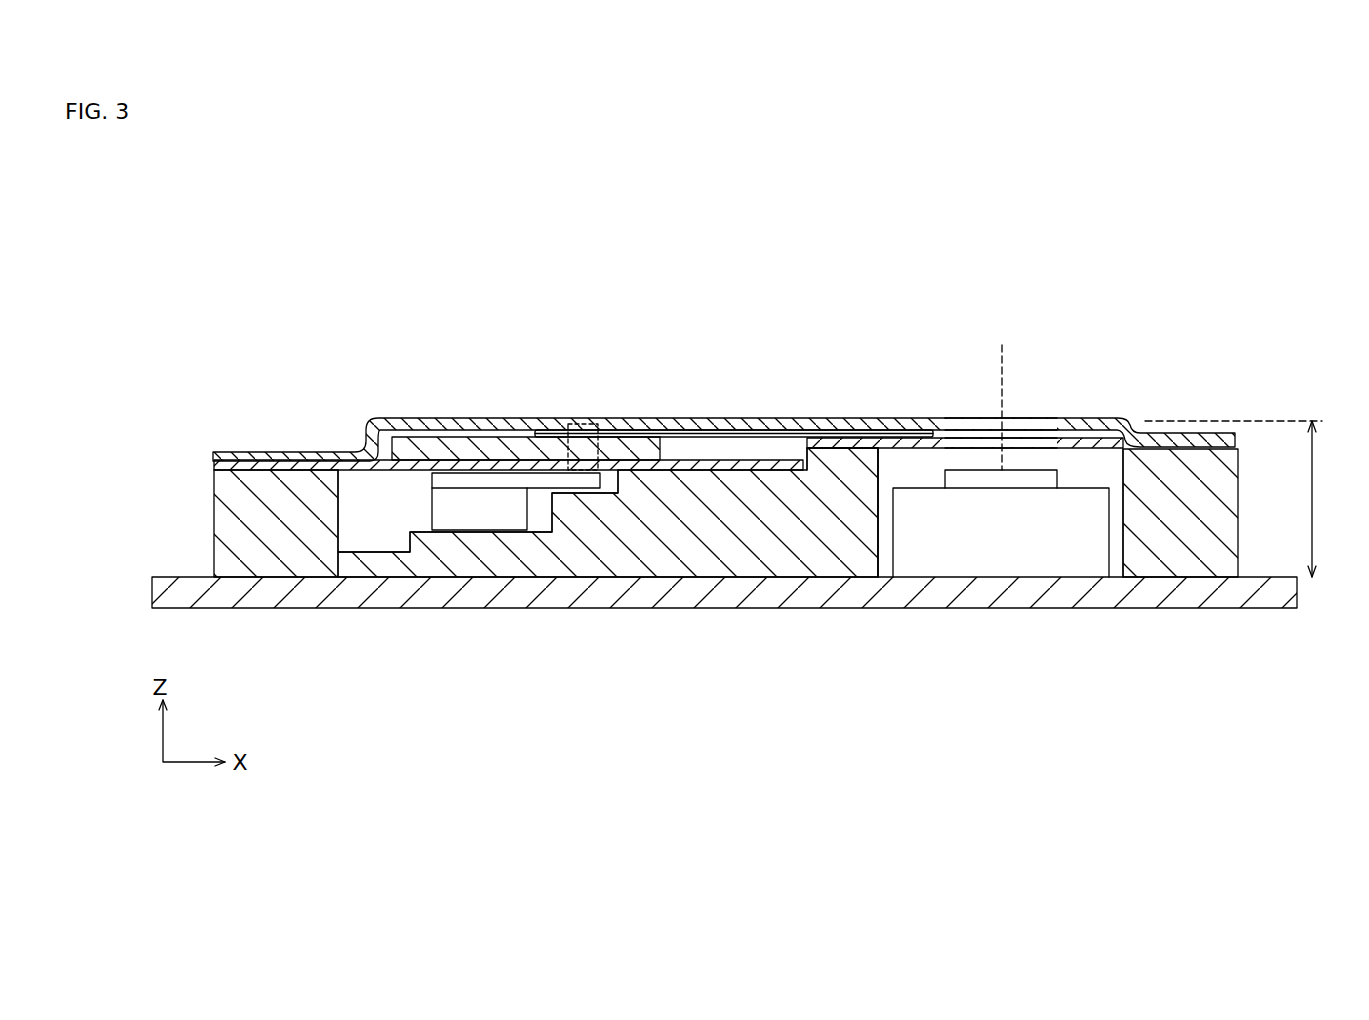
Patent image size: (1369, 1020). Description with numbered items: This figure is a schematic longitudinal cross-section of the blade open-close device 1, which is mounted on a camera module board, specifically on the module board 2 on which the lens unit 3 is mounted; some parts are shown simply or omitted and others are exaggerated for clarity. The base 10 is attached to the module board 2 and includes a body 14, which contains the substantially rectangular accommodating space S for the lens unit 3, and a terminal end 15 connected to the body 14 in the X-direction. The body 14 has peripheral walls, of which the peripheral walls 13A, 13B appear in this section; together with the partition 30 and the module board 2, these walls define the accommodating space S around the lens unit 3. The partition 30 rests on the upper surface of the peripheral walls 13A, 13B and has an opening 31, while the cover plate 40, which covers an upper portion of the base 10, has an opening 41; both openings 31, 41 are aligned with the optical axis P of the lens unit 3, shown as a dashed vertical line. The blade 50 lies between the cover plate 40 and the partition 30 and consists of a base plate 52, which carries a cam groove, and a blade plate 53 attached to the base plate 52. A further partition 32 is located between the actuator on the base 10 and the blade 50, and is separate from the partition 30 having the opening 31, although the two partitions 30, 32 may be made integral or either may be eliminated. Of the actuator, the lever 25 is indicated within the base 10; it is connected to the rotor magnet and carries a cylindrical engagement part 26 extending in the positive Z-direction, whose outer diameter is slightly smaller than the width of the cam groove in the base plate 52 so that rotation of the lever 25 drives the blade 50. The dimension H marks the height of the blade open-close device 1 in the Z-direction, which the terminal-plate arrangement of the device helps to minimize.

The blade open-close device 1 is at (329, 330).
The module board 2 is at (775, 598).
The lens unit 3 is at (993, 552).
The base 10 is at (673, 545).
The peripheral wall 13A is at (1188, 530).
The peripheral wall 13B is at (843, 518).
The body 14 is at (843, 488).
The terminal end 15 is at (284, 508).
The lever 25 is at (425, 508).
The engagement part 26 is at (583, 428).
The partition 30 is at (984, 397).
The opening 31 is at (1013, 443).
The partition 32 is at (730, 460).
The cover plate 40 is at (724, 393).
The opening 41 is at (965, 423).
The blade 50 is at (662, 385).
The base plate 52 is at (620, 452).
The blade plate 53 is at (583, 353).
The accommodating space S is at (900, 468).
The optical axis P is at (1002, 350).
The height H is at (1241, 499).